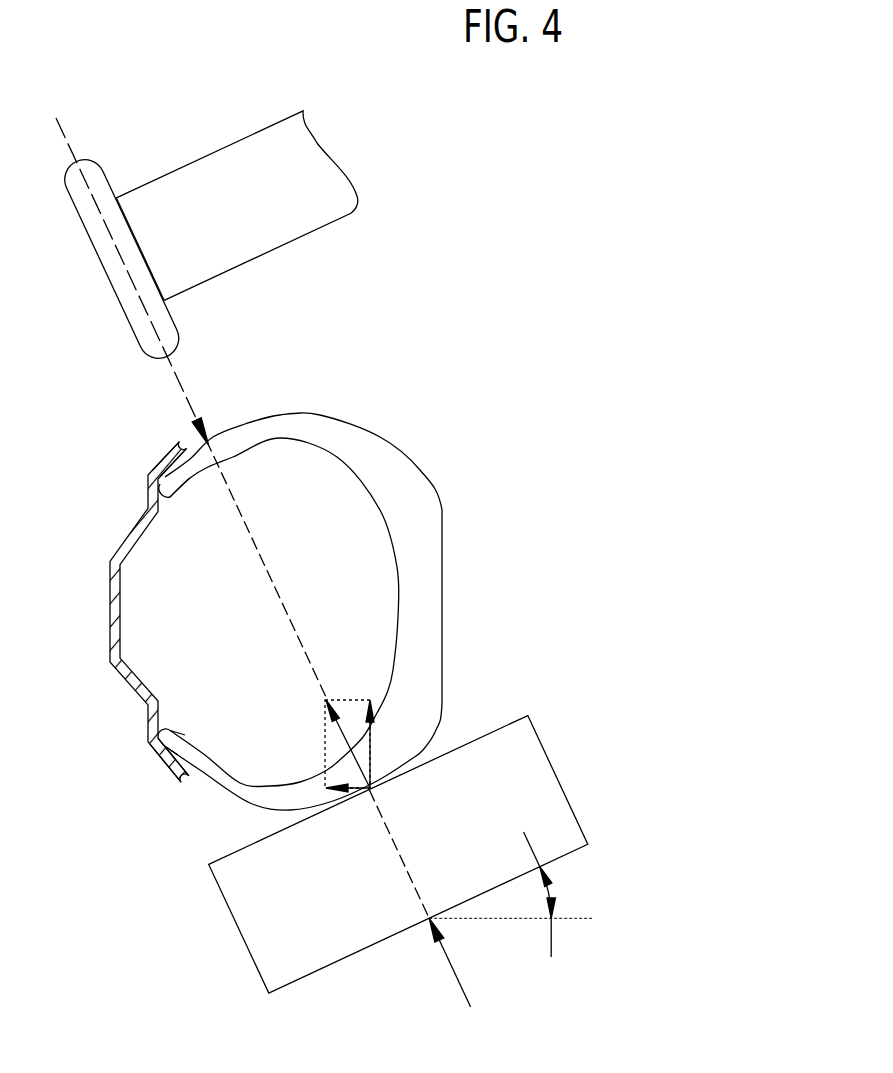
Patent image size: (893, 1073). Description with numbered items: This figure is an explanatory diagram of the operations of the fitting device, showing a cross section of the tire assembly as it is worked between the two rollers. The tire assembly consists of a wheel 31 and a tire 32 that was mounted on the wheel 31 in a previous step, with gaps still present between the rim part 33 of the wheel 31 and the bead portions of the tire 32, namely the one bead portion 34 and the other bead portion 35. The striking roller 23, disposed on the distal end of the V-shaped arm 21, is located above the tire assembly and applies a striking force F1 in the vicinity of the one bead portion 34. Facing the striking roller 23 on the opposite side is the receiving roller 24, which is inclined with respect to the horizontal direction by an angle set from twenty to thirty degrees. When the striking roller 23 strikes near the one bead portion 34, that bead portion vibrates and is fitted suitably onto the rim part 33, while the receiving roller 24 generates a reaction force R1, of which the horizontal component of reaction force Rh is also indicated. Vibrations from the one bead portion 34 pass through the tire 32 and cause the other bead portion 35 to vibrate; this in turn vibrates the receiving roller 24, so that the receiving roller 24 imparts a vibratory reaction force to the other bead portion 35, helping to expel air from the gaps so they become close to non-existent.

The arm 21 is at (203, 168).
The striking roller 23 is at (88, 163).
The receiving roller 24 is at (556, 782).
The wheel 31 is at (108, 603).
The tire 32 is at (443, 606).
The rim part 33 is at (160, 462).
The one bead portion 34 is at (185, 488).
The other bead portion 35 is at (178, 740).
The striking force F1 is at (182, 384).
The reaction force R1 is at (450, 963).
The horizontal component of reaction force Rh is at (352, 796).